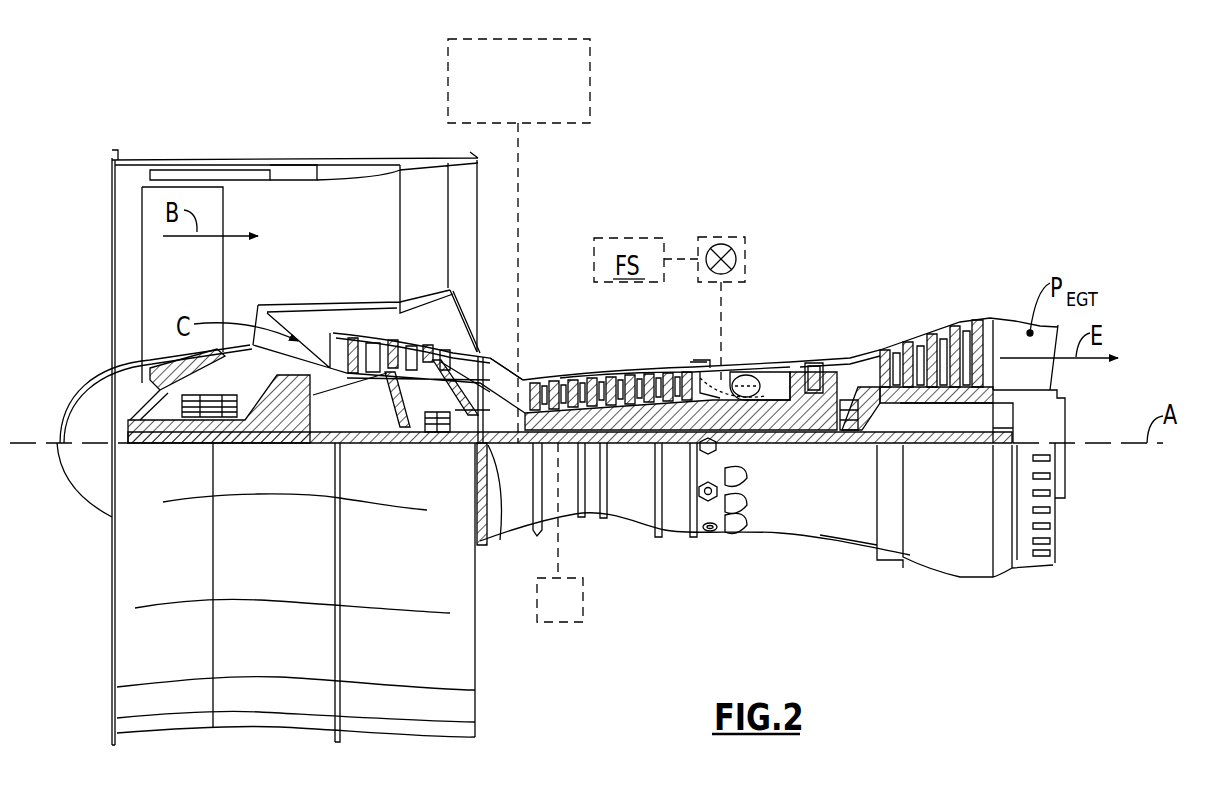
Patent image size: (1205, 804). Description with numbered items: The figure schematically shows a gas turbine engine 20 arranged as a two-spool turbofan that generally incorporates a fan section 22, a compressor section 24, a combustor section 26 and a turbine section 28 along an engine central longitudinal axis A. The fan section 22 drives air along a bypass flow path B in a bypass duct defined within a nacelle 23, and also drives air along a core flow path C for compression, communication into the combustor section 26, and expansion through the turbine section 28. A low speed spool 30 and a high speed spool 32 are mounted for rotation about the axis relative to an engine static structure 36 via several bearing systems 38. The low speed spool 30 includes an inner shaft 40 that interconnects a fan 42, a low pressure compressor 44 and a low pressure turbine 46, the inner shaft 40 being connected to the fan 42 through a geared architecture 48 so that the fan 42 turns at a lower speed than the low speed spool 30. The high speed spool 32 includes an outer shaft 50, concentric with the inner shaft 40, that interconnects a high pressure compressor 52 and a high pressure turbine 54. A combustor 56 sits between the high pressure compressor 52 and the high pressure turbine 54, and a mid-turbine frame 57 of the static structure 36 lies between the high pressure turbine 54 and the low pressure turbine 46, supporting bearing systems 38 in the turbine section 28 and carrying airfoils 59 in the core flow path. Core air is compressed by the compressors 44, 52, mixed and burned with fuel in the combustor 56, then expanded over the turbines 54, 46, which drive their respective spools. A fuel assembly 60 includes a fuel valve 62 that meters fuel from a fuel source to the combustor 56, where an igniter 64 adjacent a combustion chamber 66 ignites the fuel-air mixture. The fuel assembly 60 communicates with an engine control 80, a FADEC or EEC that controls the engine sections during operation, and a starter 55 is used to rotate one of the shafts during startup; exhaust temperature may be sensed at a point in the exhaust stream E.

The gas turbine engine 20 is at (762, 210).
The fan section 22 is at (225, 150).
The nacelle 23 is at (297, 165).
The compressor section 24 is at (521, 356).
The combustor section 26 is at (782, 323).
The turbine section 28 is at (899, 299).
The low speed spool 30 is at (633, 447).
The high speed spool 32 is at (665, 393).
The engine static structure 36 is at (673, 534).
The bearing systems 38 is at (430, 432).
The inner shaft 40 is at (501, 543).
The fan 42 is at (198, 287).
The low pressure compressor 44 is at (400, 347).
The low pressure turbine 46 is at (942, 330).
The geared architecture 48 is at (298, 425).
The outer shaft 50 is at (758, 440).
The high pressure compressor 52 is at (604, 383).
The high pressure turbine 54 is at (817, 362).
The starter 55 is at (583, 606).
The combustor 56 is at (758, 376).
The mid-turbine frame 57 is at (859, 356).
The airfoils 59 is at (860, 382).
The fuel assembly 60 is at (712, 237).
The fuel valve 62 is at (713, 283).
The igniter 64 is at (712, 378).
The combustion chamber 66 is at (760, 391).
The engine control 80 is at (590, 78).